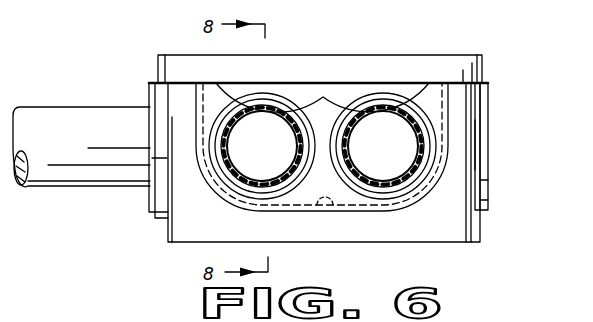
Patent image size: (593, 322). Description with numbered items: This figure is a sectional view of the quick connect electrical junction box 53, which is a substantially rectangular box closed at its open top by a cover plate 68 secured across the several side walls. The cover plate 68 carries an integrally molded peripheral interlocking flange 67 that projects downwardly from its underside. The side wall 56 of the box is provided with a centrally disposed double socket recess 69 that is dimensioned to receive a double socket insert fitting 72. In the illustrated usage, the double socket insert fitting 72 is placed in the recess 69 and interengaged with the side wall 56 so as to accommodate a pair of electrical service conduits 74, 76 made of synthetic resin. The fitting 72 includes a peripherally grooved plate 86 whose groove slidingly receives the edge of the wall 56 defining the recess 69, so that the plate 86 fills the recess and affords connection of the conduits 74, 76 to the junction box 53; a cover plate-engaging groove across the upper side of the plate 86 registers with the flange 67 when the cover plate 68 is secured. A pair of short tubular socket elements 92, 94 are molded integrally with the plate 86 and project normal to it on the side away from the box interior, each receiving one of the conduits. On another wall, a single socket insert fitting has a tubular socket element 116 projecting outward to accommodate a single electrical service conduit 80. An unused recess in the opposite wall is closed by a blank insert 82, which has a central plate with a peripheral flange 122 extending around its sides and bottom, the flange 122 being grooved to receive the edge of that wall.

The quick connect electrical junction box 53 is at (512, 239).
The side wall 56 is at (209, 213).
The peripheral interlocking flange 67 is at (448, 73).
The cover plate 68 is at (425, 49).
The double socket recess 69 is at (338, 212).
The double socket insert fitting 72 is at (236, 213).
The electrical service conduit 74 is at (282, 180).
The electrical service conduit 76 is at (408, 173).
The single electrical service conduit 80 is at (103, 140).
The blank insert 82 is at (500, 107).
The peripherally grooved plate 86 is at (215, 97).
The tubular socket element 92 is at (296, 97).
The tubular socket element 94 is at (363, 88).
The tubular socket element 116 is at (150, 203).
The peripheral flange 122 is at (488, 143).